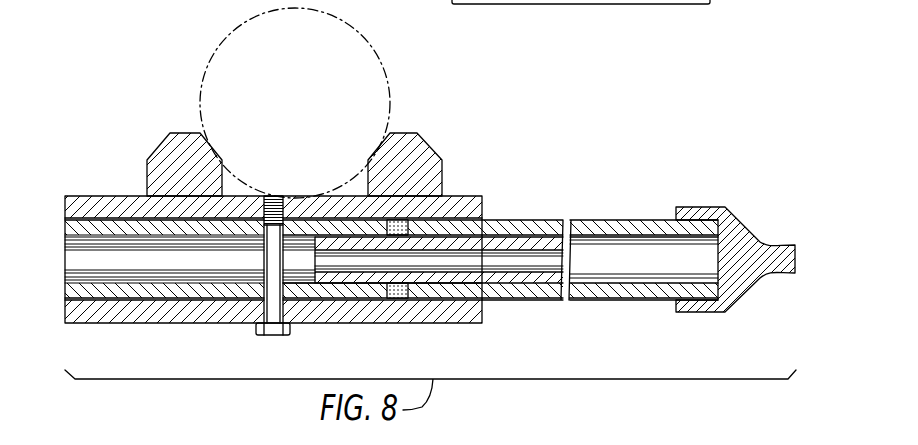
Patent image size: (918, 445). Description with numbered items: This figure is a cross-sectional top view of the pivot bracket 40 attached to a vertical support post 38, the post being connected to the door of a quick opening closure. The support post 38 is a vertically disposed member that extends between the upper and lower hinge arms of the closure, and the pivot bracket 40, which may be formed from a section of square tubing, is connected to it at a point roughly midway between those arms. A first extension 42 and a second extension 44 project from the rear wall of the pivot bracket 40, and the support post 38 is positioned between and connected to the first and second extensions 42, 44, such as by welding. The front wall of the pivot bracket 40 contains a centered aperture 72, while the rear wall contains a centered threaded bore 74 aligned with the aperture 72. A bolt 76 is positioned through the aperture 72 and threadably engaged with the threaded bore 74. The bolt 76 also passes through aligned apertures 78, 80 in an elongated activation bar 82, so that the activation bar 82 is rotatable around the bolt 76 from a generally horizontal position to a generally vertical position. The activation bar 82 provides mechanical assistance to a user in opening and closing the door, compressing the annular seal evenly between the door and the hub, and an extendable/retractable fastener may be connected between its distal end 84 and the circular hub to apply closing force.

The support post 38 is at (230, 33).
The pivot bracket 40 is at (432, 331).
The first extension 42 is at (155, 172).
The second extension 44 is at (437, 172).
The aperture 72 is at (262, 301).
The threaded bore 74 is at (252, 197).
The bolt 76 is at (267, 335).
The aperture 78 is at (285, 292).
The aperture 80 is at (293, 219).
The activation bar 82 is at (537, 219).
The distal end 84 is at (738, 288).